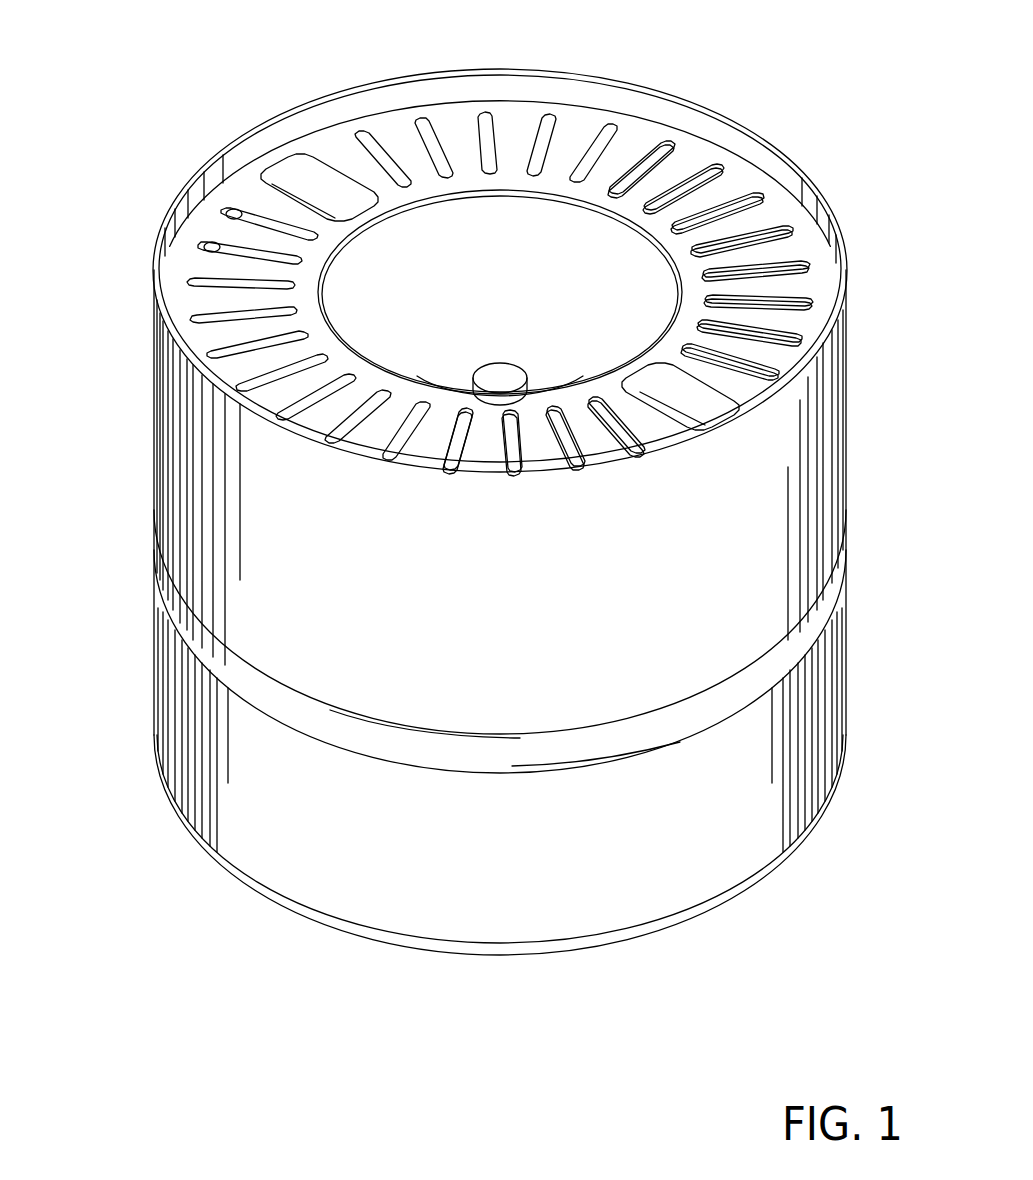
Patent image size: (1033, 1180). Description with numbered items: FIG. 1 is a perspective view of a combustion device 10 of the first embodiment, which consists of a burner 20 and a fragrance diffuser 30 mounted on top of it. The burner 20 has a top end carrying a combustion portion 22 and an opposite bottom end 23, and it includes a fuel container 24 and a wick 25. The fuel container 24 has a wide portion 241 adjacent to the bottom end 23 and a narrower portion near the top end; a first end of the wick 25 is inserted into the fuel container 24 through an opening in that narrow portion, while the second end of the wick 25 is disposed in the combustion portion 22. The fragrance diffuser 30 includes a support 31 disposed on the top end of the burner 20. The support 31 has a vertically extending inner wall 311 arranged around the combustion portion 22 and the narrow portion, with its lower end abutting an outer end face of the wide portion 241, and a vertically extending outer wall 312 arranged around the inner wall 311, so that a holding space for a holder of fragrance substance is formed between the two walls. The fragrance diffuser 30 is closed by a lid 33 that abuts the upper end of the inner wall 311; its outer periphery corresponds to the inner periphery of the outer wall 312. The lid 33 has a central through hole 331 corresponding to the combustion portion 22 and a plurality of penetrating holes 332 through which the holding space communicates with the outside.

The combustion device 10 is at (487, 546).
The burner 20 is at (487, 796).
The combustion portion 22 is at (500, 207).
The bottom end 23 is at (528, 988).
The fuel container 24 is at (487, 641).
The wide portion 241 is at (820, 700).
The wick 25 is at (500, 372).
The fragrance diffuser 30 is at (441, 374).
The support 31 is at (441, 402).
The inner wall 311 is at (432, 245).
The outer wall 312 is at (195, 452).
The lid 33 is at (449, 252).
The through hole 331 is at (622, 232).
The penetrating holes 332 is at (240, 210).